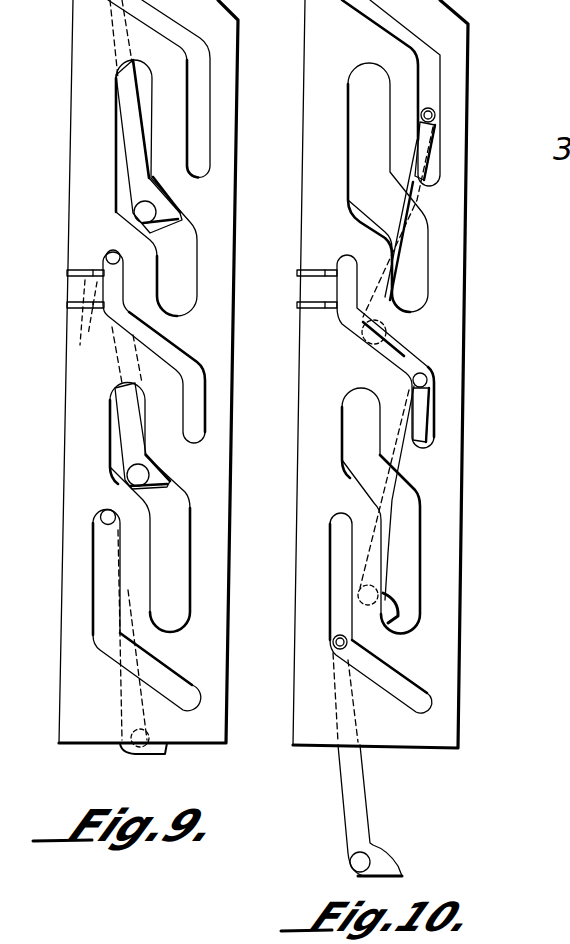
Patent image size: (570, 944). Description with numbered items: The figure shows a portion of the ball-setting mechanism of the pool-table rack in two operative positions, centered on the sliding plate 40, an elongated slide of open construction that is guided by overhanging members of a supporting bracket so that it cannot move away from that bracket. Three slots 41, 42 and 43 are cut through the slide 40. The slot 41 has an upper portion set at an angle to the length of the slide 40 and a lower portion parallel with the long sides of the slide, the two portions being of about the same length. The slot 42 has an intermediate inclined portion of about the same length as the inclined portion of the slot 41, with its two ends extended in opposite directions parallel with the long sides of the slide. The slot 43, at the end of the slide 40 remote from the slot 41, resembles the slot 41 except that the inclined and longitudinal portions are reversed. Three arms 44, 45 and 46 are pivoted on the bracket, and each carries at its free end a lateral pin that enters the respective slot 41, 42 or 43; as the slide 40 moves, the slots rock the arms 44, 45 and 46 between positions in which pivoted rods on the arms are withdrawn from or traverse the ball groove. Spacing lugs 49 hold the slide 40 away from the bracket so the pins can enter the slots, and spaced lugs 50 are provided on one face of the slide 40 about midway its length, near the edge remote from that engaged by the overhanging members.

In FIG. 9, the sliding plate 40 is at (110, 571).
In FIG. 10, the sliding plate 40 is at (466, 311).
In FIG. 9, the slot 41 is at (203, 65).
In FIG. 10, the slot 41 is at (391, 93).
In FIG. 9, the slot 42 is at (173, 356).
In FIG. 10, the slot 42 is at (385, 255).
In FIG. 9, the slot 43 is at (160, 662).
In FIG. 10, the slot 43 is at (382, 673).
In FIG. 9, the arm 44 is at (138, 168).
In FIG. 10, the arm 44 is at (427, 157).
In FIG. 9, the arm 45 is at (133, 440).
In FIG. 10, the arm 45 is at (417, 402).
In FIG. 10, the arm 46 is at (368, 793).
In FIG. 10, the spacing lugs 49 is at (545, 545).
In FIG. 9, the spaced lugs 50 is at (91, 310).
In FIG. 10, the spaced lugs 50 is at (308, 310).